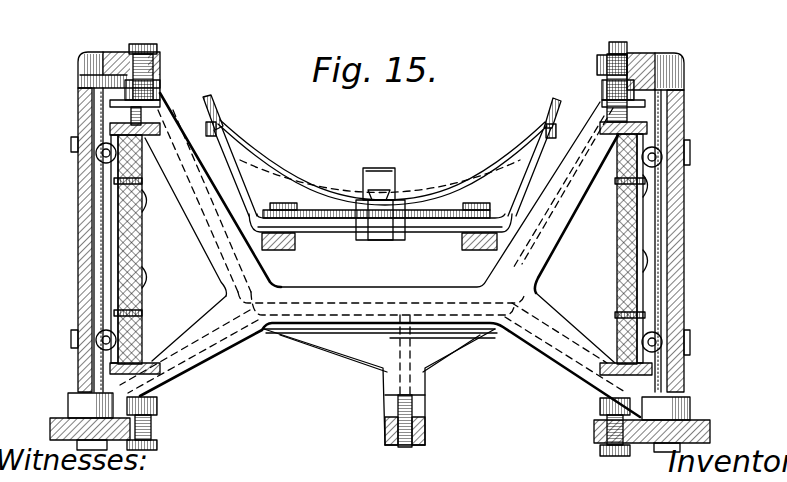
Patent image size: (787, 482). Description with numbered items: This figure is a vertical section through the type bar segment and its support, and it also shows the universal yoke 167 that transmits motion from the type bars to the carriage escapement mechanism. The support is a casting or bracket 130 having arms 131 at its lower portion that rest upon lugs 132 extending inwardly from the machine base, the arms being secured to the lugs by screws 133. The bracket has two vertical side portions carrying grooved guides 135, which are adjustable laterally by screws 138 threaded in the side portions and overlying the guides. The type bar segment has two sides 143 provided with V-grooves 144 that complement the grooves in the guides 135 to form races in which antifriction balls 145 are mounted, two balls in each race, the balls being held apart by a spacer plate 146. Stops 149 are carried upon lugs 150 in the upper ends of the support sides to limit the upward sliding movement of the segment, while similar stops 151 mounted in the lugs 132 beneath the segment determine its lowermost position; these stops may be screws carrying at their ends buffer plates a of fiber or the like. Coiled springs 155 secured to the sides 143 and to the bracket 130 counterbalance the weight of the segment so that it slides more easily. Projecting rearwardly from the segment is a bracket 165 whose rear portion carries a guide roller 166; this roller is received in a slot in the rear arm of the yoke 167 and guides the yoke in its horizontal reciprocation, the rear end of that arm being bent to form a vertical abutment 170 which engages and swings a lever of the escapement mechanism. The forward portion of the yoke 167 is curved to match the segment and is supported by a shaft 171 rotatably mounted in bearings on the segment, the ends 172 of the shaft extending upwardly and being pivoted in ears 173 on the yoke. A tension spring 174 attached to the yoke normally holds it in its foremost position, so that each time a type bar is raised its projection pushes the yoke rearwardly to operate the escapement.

The bracket 130 is at (360, 310).
The arms 131 is at (230, 388).
The lugs 132 is at (162, 440).
The screws 133 is at (400, 447).
The grooved guides 135 is at (82, 215).
The screws 138 is at (73, 148).
The sides 143 is at (142, 242).
The V-grooves 144 is at (208, 293).
The antifriction balls 145 is at (98, 335).
The spacer plate 146 is at (103, 256).
The stops 149 is at (144, 45).
The lugs 150 is at (163, 70).
The stops 151 is at (140, 452).
The coiled springs 155 is at (143, 200).
The bracket 165 is at (443, 215).
The guide roller 166 is at (393, 197).
The universal yoke 167 is at (327, 195).
The vertical abutment 170 is at (375, 172).
The shaft 171 is at (335, 233).
The ends of shaft 172 is at (240, 172).
The ears 173 is at (215, 127).
The tension spring 174 is at (364, 166).
The buffer plates a is at (160, 95).